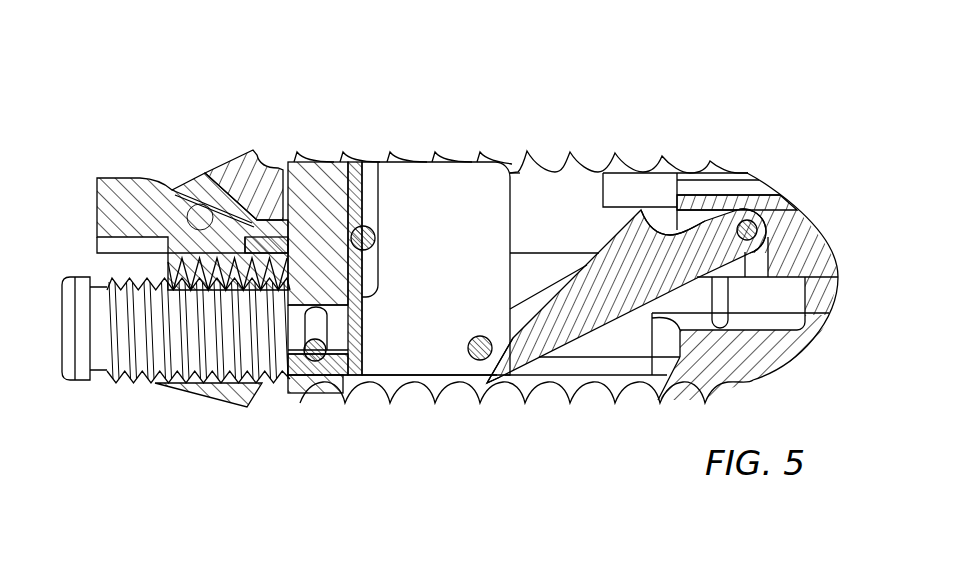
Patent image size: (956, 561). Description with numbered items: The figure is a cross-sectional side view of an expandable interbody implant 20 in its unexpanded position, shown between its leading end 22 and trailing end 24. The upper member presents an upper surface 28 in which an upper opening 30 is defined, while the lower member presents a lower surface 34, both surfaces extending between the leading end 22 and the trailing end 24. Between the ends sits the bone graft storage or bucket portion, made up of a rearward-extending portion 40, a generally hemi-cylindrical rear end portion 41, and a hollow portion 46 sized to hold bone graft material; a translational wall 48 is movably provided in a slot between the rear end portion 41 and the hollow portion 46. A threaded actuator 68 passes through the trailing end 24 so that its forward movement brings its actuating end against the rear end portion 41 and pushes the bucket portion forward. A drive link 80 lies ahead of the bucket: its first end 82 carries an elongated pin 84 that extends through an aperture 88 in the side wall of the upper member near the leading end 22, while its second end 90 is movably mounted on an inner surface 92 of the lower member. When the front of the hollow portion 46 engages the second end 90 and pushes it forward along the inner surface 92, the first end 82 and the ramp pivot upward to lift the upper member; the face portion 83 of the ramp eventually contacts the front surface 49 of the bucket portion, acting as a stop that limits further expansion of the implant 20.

The expandable interbody implant 20 is at (170, 90).
The leading end 22 is at (840, 279).
The trailing end 24 is at (195, 384).
The upper surface 28 is at (438, 161).
The upper opening 30 is at (568, 194).
The lower surface 34 is at (352, 376).
The rearward-extending portion 40 is at (122, 188).
The rear end portion 41 is at (312, 178).
The hollow portion 46 is at (460, 207).
The translational wall 48 is at (354, 165).
The front surface 49 is at (528, 200).
The actuator 68 is at (112, 280).
The drive link 80 is at (643, 242).
The first end 82 is at (768, 224).
The face portion 83 is at (611, 242).
The elongated pin 84 is at (772, 236).
The aperture 88 is at (741, 214).
The second end 90 is at (488, 379).
The inner surface 92 is at (600, 363).